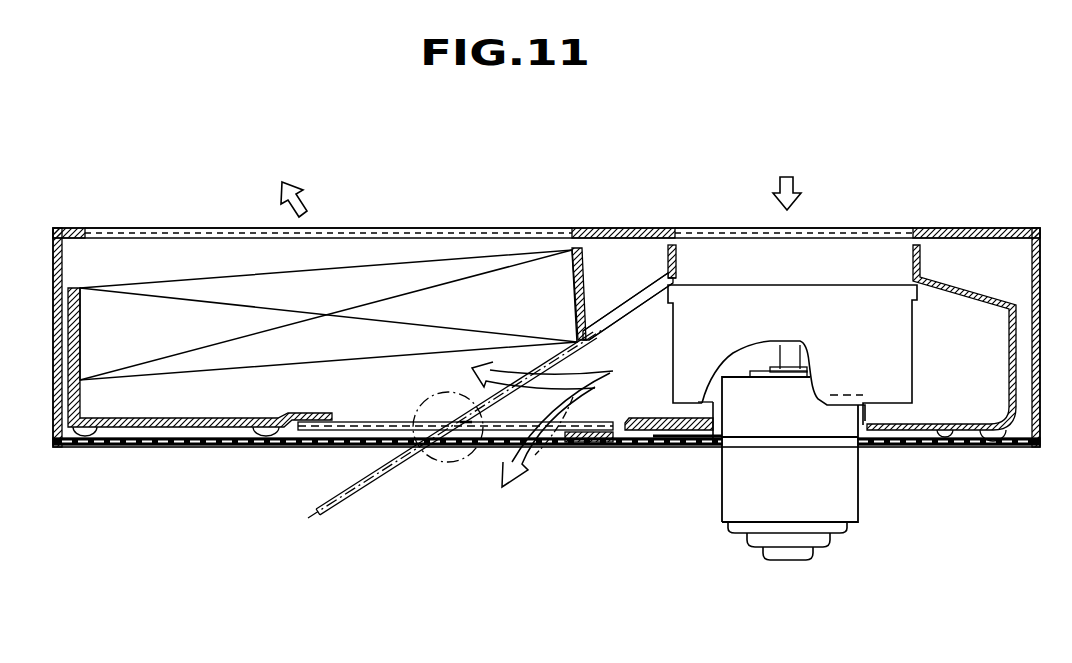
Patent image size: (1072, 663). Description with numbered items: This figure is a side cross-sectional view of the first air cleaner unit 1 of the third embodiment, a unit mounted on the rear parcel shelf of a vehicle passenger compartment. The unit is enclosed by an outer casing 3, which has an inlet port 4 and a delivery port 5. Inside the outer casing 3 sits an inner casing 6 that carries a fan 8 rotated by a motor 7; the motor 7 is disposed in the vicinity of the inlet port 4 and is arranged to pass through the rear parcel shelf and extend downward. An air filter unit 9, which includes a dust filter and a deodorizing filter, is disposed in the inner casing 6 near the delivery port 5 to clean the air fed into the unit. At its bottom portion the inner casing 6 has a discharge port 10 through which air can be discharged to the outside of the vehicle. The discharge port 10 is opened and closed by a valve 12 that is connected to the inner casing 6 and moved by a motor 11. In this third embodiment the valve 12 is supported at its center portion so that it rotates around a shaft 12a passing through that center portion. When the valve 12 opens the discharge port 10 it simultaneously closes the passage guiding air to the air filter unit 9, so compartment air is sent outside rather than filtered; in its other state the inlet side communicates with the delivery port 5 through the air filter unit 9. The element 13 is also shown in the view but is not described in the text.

The first air cleaner unit 1 is at (991, 224).
The outer casing 3 is at (658, 231).
The inlet port 4 is at (877, 229).
The delivery port 5 is at (180, 228).
The inner casing 6 is at (592, 264).
The motor 7 is at (852, 510).
The fan 8 is at (902, 368).
The air filter unit 9 is at (457, 268).
The discharge port 10 is at (342, 438).
The motor 11 is at (449, 458).
The valve 12 is at (353, 422).
The shaft 12a is at (466, 441).
The support block 13 is at (607, 408).